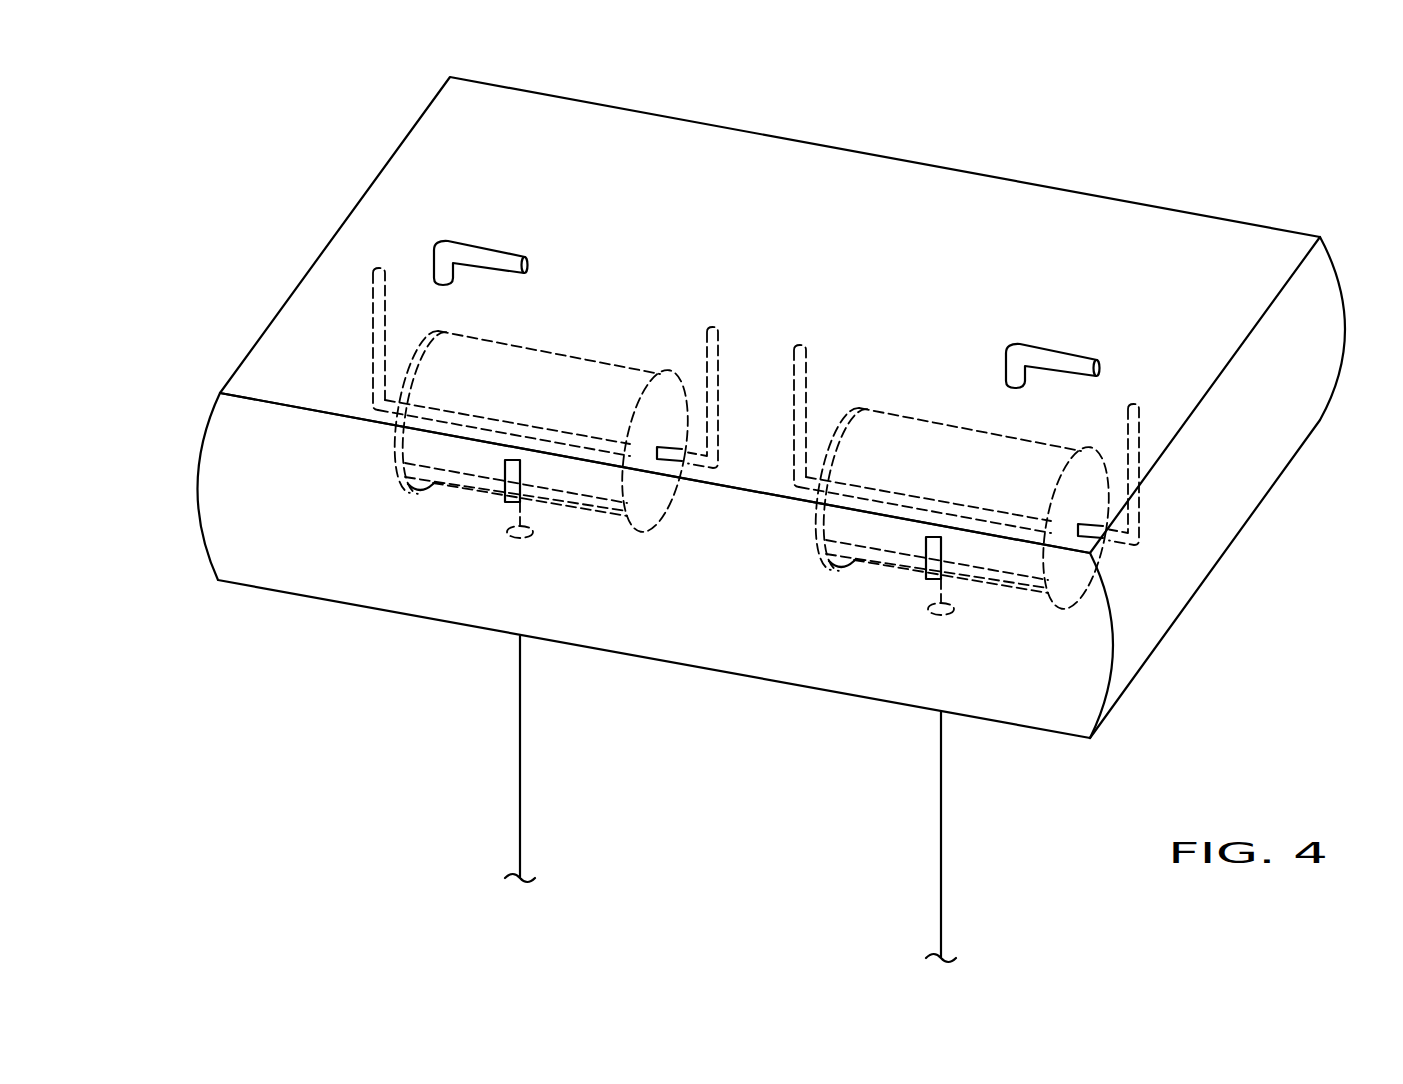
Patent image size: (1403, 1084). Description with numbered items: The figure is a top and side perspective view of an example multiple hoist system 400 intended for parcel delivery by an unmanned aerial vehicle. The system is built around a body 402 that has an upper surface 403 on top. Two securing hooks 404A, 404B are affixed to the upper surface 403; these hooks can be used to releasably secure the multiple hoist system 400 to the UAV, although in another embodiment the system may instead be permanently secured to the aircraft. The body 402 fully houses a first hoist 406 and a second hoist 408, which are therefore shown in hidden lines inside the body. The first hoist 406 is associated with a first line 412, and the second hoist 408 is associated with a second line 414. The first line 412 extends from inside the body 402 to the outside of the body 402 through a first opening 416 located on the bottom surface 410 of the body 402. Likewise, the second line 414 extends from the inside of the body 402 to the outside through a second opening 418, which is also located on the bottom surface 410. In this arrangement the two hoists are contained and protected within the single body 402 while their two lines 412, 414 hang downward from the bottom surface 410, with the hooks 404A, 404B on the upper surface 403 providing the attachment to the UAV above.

The multiple hoist system 400 is at (186, 168).
The body 402 is at (1282, 436).
The upper surface 403 is at (590, 137).
The securing hook 404A is at (530, 267).
The securing hook 404B is at (1100, 370).
The first hoist 406 is at (524, 382).
The second hoist 408 is at (927, 455).
The bottom surface 410 is at (723, 620).
The first line 412 is at (518, 758).
The second line 414 is at (941, 818).
The first opening 416 is at (513, 533).
The second opening 418 is at (930, 611).